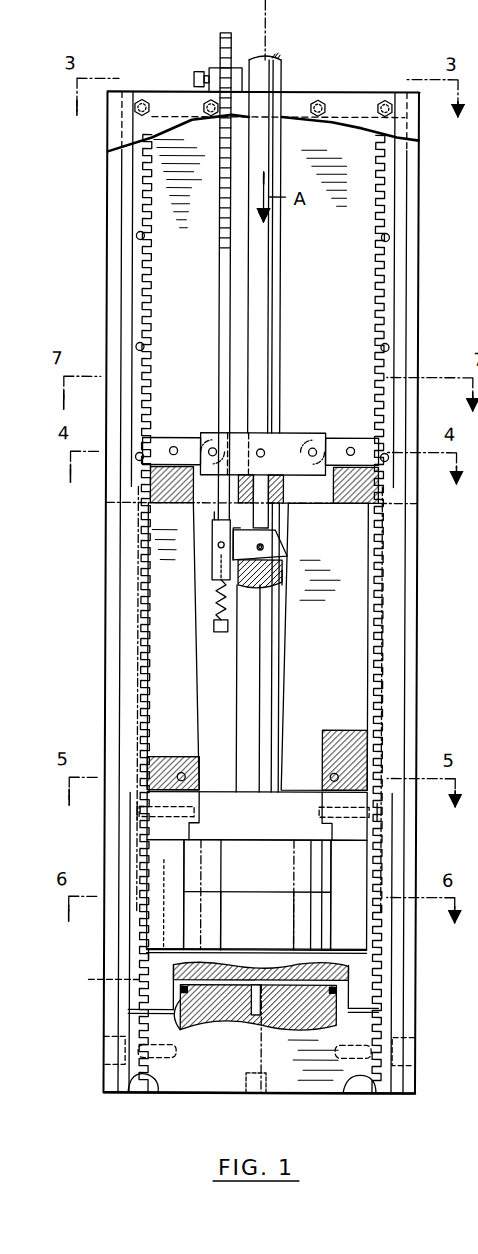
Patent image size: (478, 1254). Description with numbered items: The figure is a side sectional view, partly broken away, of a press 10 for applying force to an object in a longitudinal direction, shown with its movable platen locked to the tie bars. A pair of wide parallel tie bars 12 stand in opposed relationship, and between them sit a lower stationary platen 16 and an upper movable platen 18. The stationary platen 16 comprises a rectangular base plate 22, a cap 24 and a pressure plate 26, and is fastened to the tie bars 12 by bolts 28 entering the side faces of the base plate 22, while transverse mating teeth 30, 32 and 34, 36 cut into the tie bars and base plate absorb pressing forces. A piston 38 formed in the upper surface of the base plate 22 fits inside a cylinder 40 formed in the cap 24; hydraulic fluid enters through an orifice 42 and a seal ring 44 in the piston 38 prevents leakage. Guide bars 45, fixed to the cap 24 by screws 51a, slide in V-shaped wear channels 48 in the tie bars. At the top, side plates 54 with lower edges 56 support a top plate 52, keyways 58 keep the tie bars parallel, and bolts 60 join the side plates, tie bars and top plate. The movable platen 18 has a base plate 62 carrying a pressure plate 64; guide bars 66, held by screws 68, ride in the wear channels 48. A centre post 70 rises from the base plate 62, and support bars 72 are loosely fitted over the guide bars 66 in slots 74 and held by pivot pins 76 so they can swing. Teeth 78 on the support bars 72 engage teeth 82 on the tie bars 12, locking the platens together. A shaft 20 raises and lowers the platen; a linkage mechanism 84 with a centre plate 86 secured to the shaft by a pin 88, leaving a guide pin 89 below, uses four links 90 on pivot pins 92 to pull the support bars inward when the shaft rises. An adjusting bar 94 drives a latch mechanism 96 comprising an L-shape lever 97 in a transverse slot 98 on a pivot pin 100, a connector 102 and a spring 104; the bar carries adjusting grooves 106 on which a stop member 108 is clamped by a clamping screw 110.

The press 10 is at (362, 42).
The tie bars 12 is at (106, 254).
The lower stationary platen 16 is at (214, 1083).
The upper movable platen 18 is at (280, 813).
The shaft 20 is at (279, 318).
The base plate 22 is at (296, 1090).
The cap 24 is at (335, 948).
The pressure plate 26 is at (290, 920).
The bolts 28 is at (106, 1046).
The mating teeth 30 is at (135, 1093).
The mating teeth 32 is at (162, 1093).
The mating teeth 34 is at (350, 1088).
The mating teeth 36 is at (374, 1093).
The piston 38 is at (292, 1027).
The cylinder 40 is at (236, 966).
The orifice 42 is at (258, 1090).
The seal ring 44 is at (198, 1030).
The guide bars 45 is at (145, 950).
The wear channels 48 is at (145, 916).
The screws 51a is at (94, 979).
The top plate 52 is at (294, 123).
The side plates 54 is at (368, 133).
The lower edges 56 is at (288, 545).
The keyways 58 is at (124, 197).
The bolts 60 is at (205, 102).
The base plate 62 is at (246, 840).
The pressure plate 64 is at (290, 870).
The guide bars 66 is at (257, 895).
The screws 68 is at (140, 812).
The centre post 70 is at (278, 653).
The support bars 72 is at (186, 687).
The slots 74 is at (185, 758).
The pivot pins 76 is at (186, 777).
The teeth 78 is at (165, 440).
The teeth 82 is at (150, 330).
The linkage mechanism 84 is at (240, 445).
The centre plate 86 is at (262, 449).
The pin 88 is at (283, 490).
The guide pin 89 is at (283, 575).
The links 90 is at (195, 480).
The pivot pins 92 is at (212, 446).
The adjusting bar 94 is at (218, 280).
The latch mechanism 96 is at (238, 529).
The L-shape lever 97 is at (265, 552).
The transverse slot 98 is at (225, 540).
The pivot pin 100 is at (278, 588).
The connector 102 is at (212, 558).
The spring 104 is at (214, 625).
The adjusting grooves 106 is at (218, 232).
The stop member 108 is at (212, 70).
The clamping screw 110 is at (195, 73).